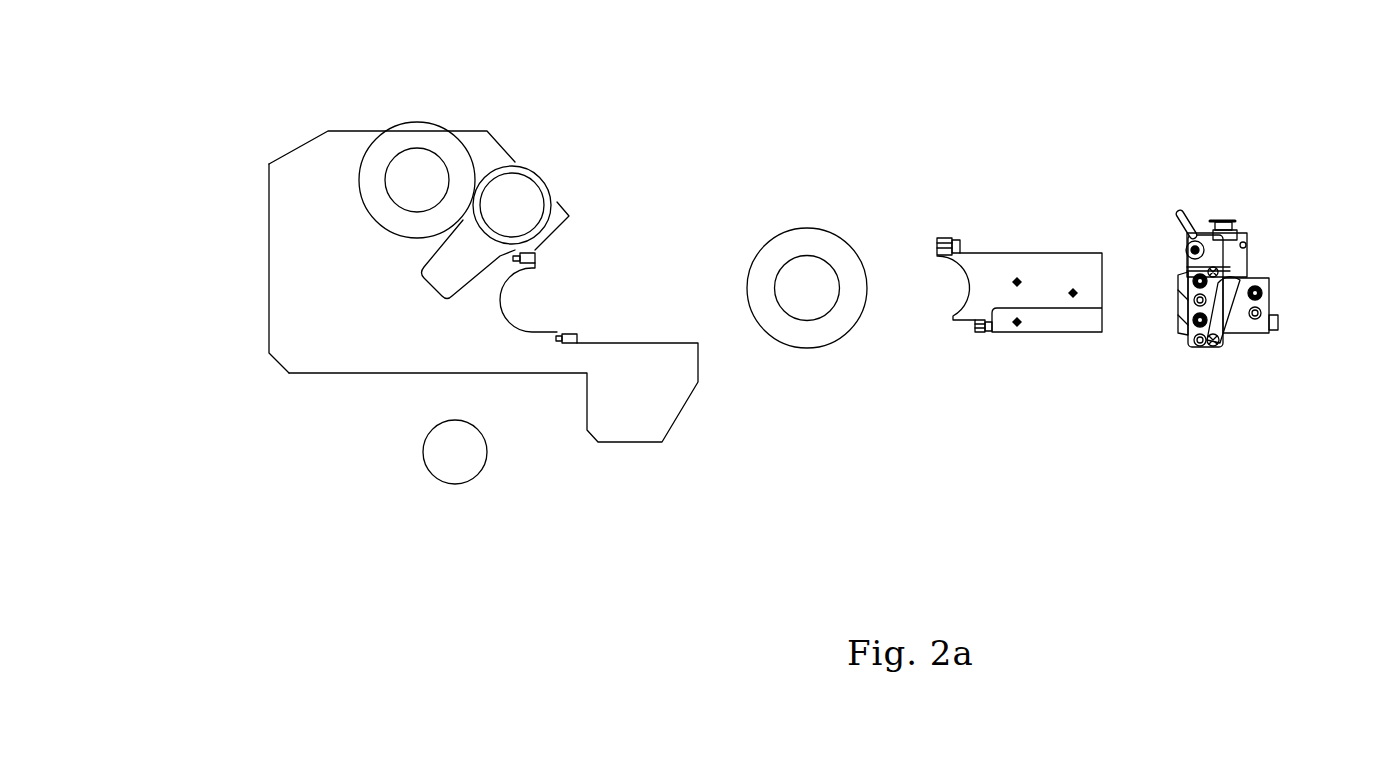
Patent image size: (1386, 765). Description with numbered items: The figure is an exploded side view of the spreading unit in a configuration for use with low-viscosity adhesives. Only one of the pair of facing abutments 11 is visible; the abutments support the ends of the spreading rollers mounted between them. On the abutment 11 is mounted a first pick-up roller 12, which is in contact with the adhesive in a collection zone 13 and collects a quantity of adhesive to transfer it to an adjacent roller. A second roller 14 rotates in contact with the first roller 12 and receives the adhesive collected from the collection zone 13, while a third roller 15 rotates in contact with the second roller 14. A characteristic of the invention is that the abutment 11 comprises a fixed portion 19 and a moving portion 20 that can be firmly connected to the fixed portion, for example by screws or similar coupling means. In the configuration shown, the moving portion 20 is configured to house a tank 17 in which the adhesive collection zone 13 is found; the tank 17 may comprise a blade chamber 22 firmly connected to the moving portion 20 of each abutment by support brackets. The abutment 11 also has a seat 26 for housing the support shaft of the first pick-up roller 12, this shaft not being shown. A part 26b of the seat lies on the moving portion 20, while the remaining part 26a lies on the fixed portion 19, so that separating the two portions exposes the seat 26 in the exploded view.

The abutment 11 is at (265, 145).
The first pick-up roller 12 is at (807, 311).
The collection zone 13 is at (1166, 289).
The second roller 14 is at (525, 197).
The third roller 15 is at (417, 148).
The tank 17 is at (1244, 206).
The fixed portion 19 is at (295, 260).
The moving portion 20 is at (982, 286).
The blade chamber 22 is at (1262, 303).
The seat 26 is at (540, 287).
The remaining part of the seat 26a is at (513, 318).
The part of the seat 26b is at (965, 282).